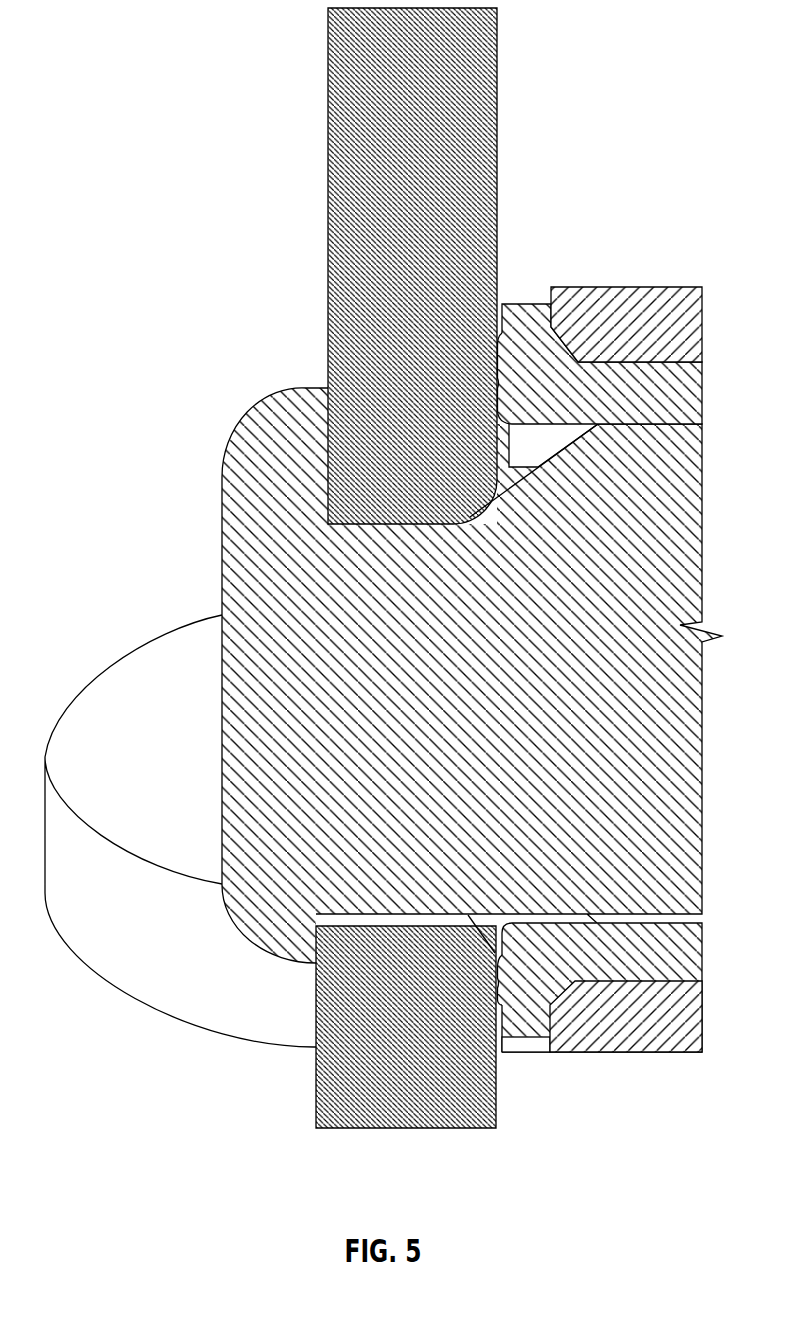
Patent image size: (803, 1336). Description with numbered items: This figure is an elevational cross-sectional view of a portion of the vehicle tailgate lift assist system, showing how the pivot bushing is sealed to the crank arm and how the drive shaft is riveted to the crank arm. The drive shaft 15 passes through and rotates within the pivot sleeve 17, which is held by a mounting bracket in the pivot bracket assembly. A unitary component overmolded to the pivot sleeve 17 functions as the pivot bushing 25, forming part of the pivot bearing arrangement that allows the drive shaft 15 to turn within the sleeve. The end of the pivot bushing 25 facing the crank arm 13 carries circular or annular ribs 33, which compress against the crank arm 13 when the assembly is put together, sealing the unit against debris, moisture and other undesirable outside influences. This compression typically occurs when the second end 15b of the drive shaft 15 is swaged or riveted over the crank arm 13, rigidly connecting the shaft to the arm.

The crank arm 13 is at (328, 107).
The drive shaft 15 is at (300, 534).
The second end of the drive shaft 15b is at (269, 397).
The pivot sleeve 17 is at (653, 287).
The pivot bushing 25 is at (533, 304).
The annular ribs 33 is at (498, 343).